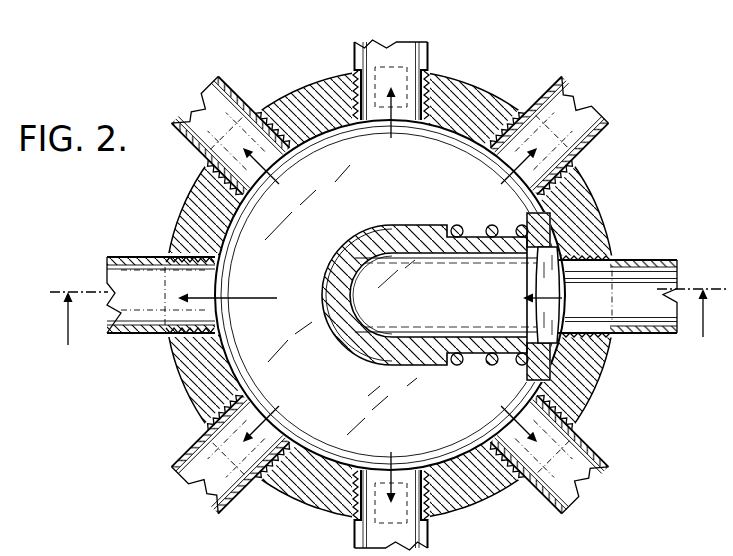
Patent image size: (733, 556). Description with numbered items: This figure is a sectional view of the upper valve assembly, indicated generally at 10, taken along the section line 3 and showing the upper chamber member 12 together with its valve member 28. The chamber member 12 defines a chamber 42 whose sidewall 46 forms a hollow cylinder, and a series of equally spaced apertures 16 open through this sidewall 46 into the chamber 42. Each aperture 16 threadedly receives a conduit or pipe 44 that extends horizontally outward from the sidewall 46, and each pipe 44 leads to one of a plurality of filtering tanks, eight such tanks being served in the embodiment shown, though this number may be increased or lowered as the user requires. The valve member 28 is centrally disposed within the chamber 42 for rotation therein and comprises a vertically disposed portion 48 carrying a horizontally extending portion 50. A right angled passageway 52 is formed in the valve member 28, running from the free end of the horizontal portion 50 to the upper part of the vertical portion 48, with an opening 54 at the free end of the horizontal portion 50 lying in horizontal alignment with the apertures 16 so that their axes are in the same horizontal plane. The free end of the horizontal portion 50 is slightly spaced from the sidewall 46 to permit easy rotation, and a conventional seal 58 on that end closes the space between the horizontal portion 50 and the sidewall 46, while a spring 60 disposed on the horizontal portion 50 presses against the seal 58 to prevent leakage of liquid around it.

The section line 3- 3 is at (378, 312).
The manifold assembly 10 is at (387, 270).
The upper chamber member 12 is at (387, 295).
The apertures 16 is at (274, 159).
The valve member 28 is at (427, 295).
The chamber 42 is at (287, 294).
The conduit or pipe 44 is at (228, 84).
The sidewall 46 is at (593, 215).
The vertically disposed portion 48 is at (340, 338).
The horizontally extending portion 50 is at (476, 343).
The right angled passageway 52 is at (432, 318).
The opening 54 is at (539, 296).
The seal 58 is at (528, 377).
The spring 60 is at (457, 225).